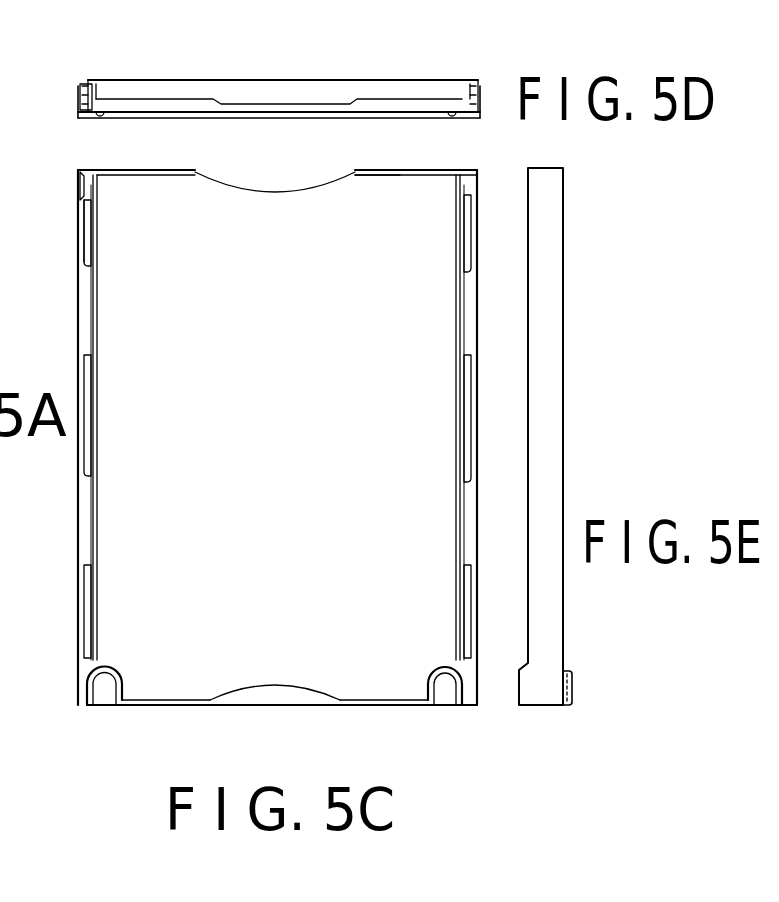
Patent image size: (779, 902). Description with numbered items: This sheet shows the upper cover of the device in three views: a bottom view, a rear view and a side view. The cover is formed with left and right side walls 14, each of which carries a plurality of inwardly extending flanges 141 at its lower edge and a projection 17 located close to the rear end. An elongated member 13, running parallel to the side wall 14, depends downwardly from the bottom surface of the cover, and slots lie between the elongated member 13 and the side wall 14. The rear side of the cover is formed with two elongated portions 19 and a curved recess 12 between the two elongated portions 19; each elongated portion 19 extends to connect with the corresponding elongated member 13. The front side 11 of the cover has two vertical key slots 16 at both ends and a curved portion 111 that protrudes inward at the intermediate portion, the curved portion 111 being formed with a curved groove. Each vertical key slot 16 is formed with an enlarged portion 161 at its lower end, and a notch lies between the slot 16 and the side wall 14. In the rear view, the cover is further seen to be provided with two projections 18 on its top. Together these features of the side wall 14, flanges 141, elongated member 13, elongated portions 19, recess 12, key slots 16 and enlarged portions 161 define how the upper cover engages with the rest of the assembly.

In FIG. 5C, the front side 11 is at (386, 702).
In FIG. 5C, the curved recess 12 is at (280, 190).
In FIG. 5C, the elongated member 13 is at (100, 295).
In FIG. 5E, the side wall 14 is at (550, 286).
In FIG. 5C, the vertical key slot 16 is at (107, 690).
In FIG. 5C, the projection 17 is at (80, 172).
In FIG. 5D, the projection 18 is at (90, 117).
In FIG. 5C, the elongated portion 19 is at (385, 170).
In FIG. 5C, the curved portion 111 is at (280, 701).
In FIG. 5D, the flange 141 is at (90, 83).
In FIG. 5C, the flange 141 is at (84, 238).
In FIG. 5E, the enlarged portion 161 is at (572, 690).